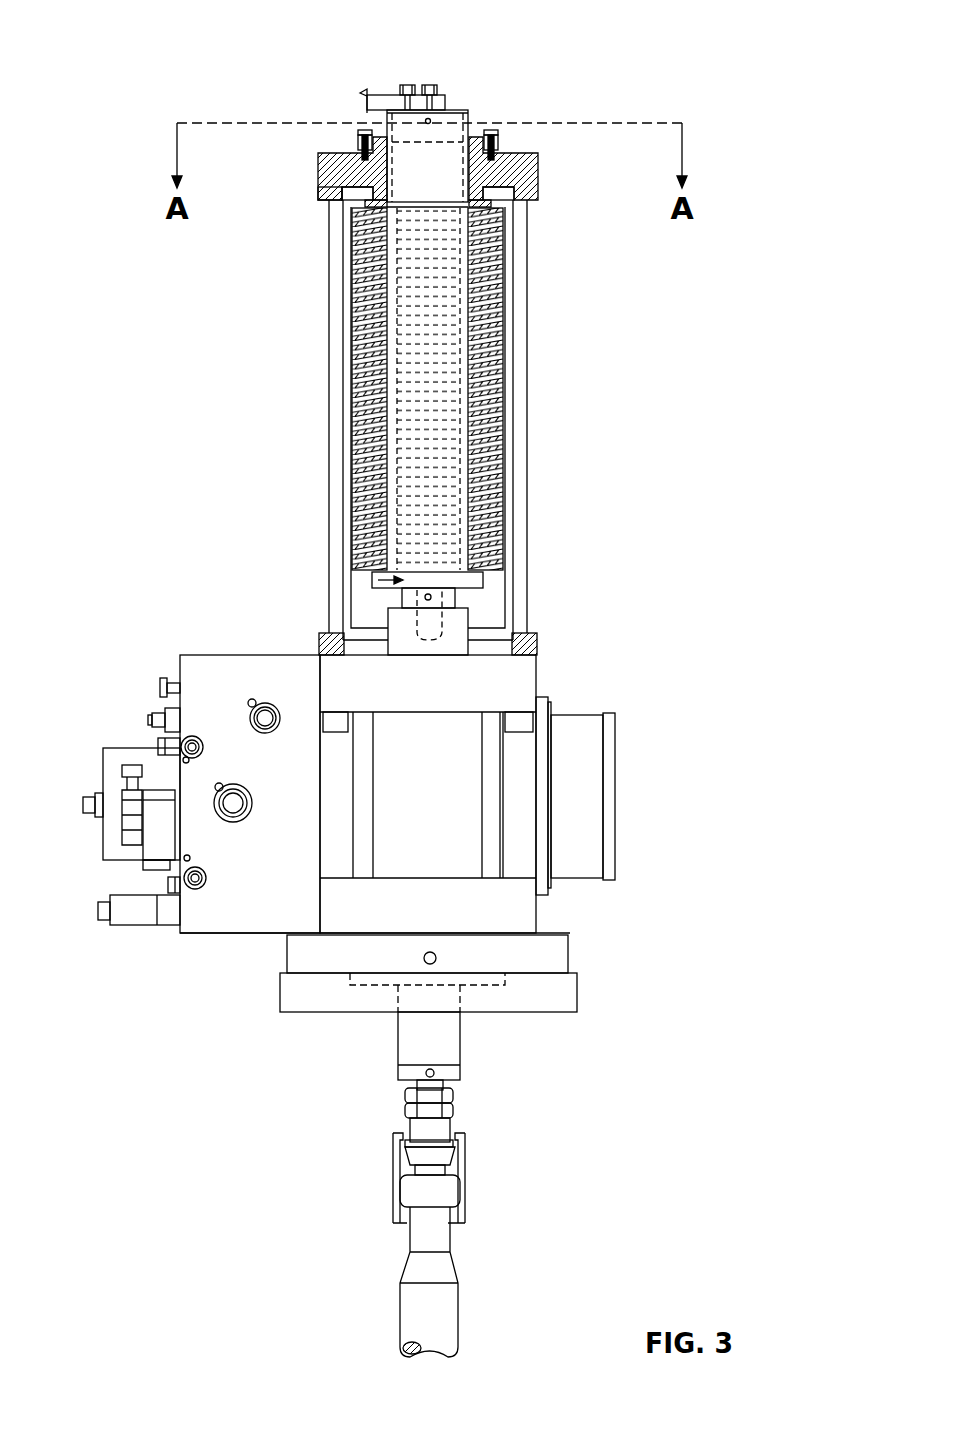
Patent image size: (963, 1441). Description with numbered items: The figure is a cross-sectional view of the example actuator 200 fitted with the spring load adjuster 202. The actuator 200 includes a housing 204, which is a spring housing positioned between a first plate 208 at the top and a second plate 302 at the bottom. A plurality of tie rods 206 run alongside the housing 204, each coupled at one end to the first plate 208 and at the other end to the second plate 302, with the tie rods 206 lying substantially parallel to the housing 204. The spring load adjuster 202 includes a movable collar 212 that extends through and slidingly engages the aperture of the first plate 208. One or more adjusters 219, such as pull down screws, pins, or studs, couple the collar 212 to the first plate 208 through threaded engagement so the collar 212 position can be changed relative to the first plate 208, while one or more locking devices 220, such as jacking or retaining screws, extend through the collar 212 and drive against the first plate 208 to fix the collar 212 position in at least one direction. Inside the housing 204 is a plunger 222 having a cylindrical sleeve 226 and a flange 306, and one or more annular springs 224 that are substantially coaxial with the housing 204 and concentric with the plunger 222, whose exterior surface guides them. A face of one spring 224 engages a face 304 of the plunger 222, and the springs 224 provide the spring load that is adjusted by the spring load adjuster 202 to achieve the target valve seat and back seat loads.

The actuator 200 is at (125, 38).
The spring load adjuster 202 is at (552, 162).
The housing 204 is at (506, 398).
The tie rods 206 is at (336, 357).
The first plate 208 is at (318, 172).
The collar 212 is at (329, 200).
The adjusters 219 is at (358, 128).
The locking devices 220 is at (495, 128).
The plunger 222 is at (376, 580).
The springs 224 is at (504, 523).
The sleeve 226 is at (504, 450).
The second plate 302 is at (538, 637).
The face 304 is at (365, 568).
The flange 306 is at (486, 580).